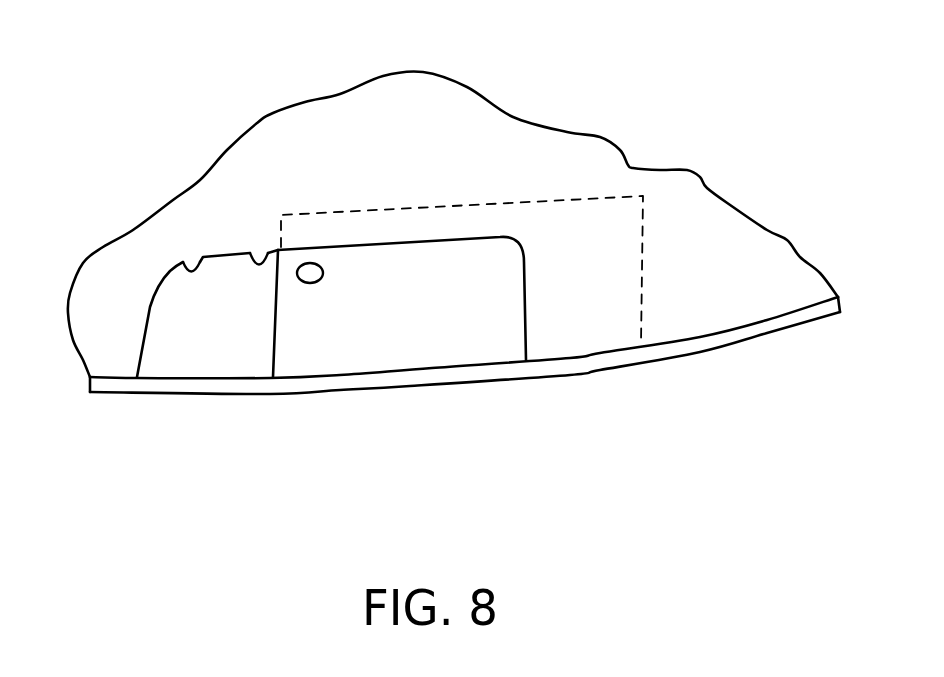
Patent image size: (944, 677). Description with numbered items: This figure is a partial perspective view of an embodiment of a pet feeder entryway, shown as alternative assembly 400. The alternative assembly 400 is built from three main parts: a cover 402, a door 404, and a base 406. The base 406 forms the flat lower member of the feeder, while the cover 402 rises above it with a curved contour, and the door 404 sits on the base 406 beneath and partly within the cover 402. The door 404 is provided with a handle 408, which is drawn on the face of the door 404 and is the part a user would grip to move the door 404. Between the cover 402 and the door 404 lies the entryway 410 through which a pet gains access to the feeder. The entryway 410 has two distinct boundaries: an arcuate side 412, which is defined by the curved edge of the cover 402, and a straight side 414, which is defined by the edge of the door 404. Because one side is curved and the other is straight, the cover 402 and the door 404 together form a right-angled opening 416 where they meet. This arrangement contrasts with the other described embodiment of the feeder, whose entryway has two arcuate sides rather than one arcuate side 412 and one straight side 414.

The alternative assembly 400 is at (90, 385).
The cover 402 is at (465, 127).
The door 404 is at (475, 337).
The base 406 is at (263, 398).
The handle 408 is at (323, 272).
The entryway 410 is at (180, 360).
The arcuate side 412 is at (200, 258).
The straight side 414 is at (273, 350).
The right-angled opening 416 is at (253, 256).